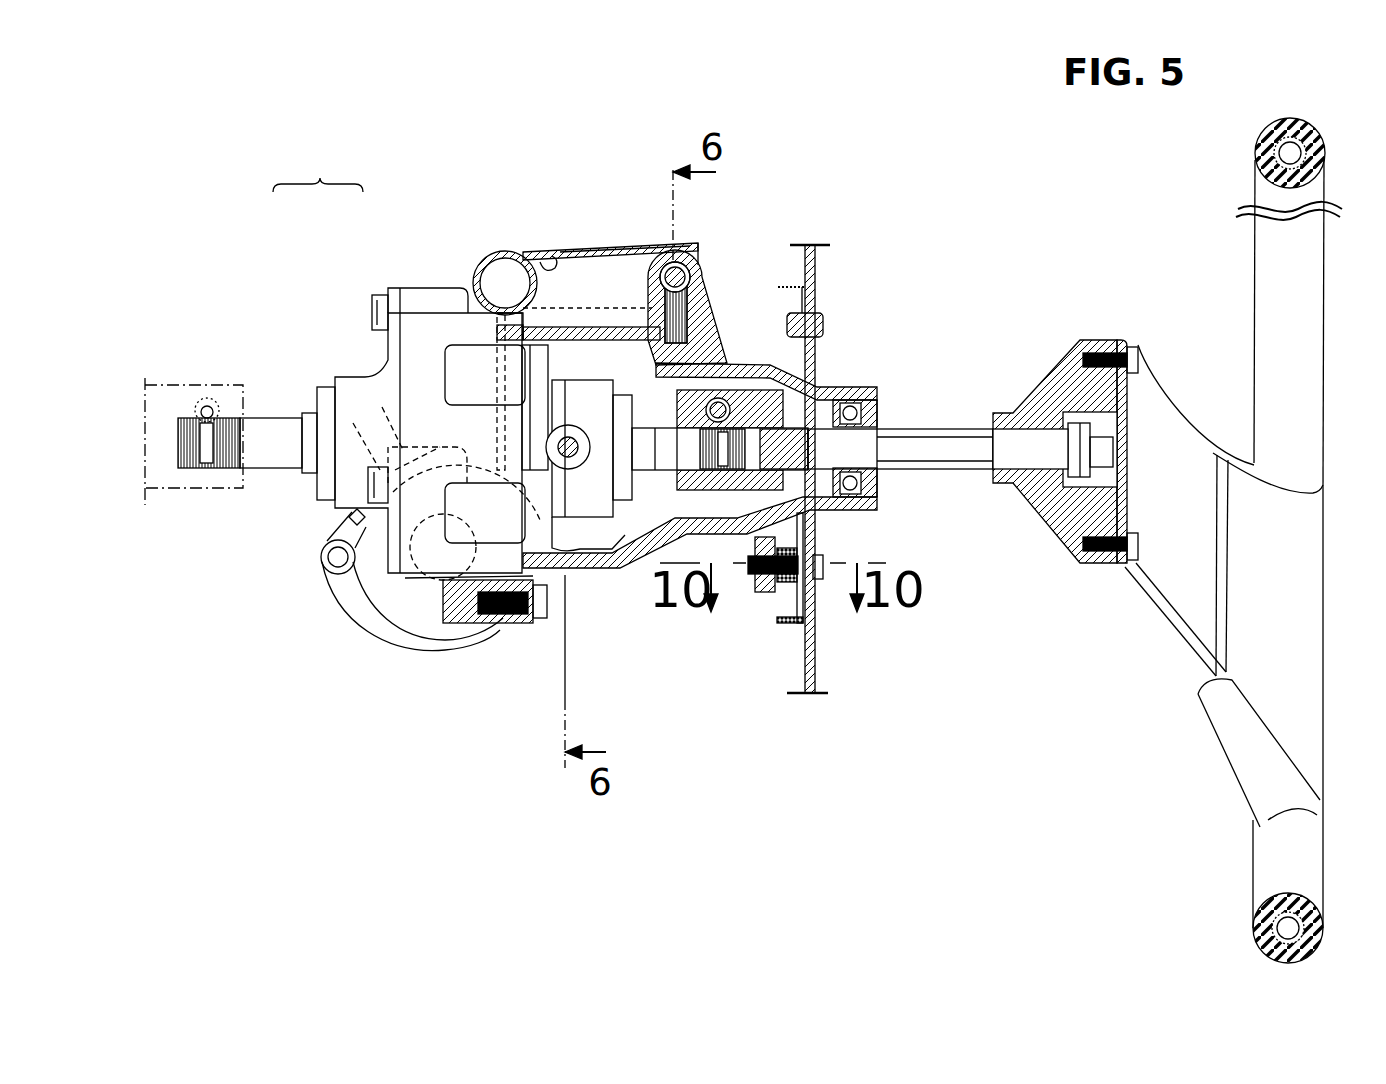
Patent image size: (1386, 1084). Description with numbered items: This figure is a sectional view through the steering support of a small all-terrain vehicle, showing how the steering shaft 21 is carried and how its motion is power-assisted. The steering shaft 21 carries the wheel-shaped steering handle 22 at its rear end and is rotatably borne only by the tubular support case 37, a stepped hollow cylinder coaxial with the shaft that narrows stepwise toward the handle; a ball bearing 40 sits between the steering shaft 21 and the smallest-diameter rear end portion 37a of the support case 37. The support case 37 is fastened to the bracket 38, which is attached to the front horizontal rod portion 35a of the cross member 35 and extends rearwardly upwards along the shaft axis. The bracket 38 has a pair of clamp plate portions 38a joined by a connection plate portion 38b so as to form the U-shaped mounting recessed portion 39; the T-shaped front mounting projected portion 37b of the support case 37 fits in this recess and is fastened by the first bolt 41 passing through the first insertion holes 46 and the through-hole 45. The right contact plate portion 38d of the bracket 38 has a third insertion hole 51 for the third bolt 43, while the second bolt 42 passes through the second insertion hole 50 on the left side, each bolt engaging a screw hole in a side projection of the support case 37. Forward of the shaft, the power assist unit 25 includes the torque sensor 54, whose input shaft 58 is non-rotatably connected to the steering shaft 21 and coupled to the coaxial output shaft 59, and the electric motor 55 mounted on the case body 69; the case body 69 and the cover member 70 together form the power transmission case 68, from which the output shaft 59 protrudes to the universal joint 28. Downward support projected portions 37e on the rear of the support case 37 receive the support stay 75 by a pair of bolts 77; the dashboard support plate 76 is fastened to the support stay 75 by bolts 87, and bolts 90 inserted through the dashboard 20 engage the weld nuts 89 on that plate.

The dashboard 20 is at (816, 282).
The steering shaft 21 is at (918, 432).
The steering handle 22 is at (1282, 355).
The power assist unit 25 is at (470, 640).
The universal joint 28 is at (178, 382).
The cross member 35 is at (478, 262).
The front horizontal rod portion 35a is at (502, 255).
The support case 37 is at (590, 568).
The rear end portion 37a is at (848, 387).
The front mounting projected portion 37b is at (685, 300).
The support projected portions 37e is at (757, 590).
The bracket 38 is at (583, 248).
The clamp plate portions 38a is at (702, 262).
The connection plate portion 38b is at (616, 247).
The right contact plate portion 38d is at (680, 470).
The mounting recessed portion 39 is at (550, 262).
The ball bearing 40 is at (862, 485).
The first bolt 41 is at (700, 305).
The second bolt 42 is at (555, 442).
The third bolt 43 is at (717, 400).
The through-hole 45 is at (660, 285).
The first insertion holes 46 is at (688, 250).
The second insertion hole 50 is at (560, 440).
The third insertion hole 51 is at (713, 400).
The torque sensor 54 is at (608, 550).
The electric motor 55 is at (418, 617).
The input shaft 58 is at (698, 479).
The output shaft 59 is at (268, 425).
The power transmission case 68 is at (318, 167).
The case body 69 is at (432, 293).
The cover member 70 is at (390, 292).
The support stay 75 is at (774, 594).
The dashboard support plate 76 is at (792, 624).
The bolts 77 is at (790, 548).
The bolts 87 is at (816, 580).
The weld nuts 89 is at (800, 312).
The bolts 90 is at (826, 332).